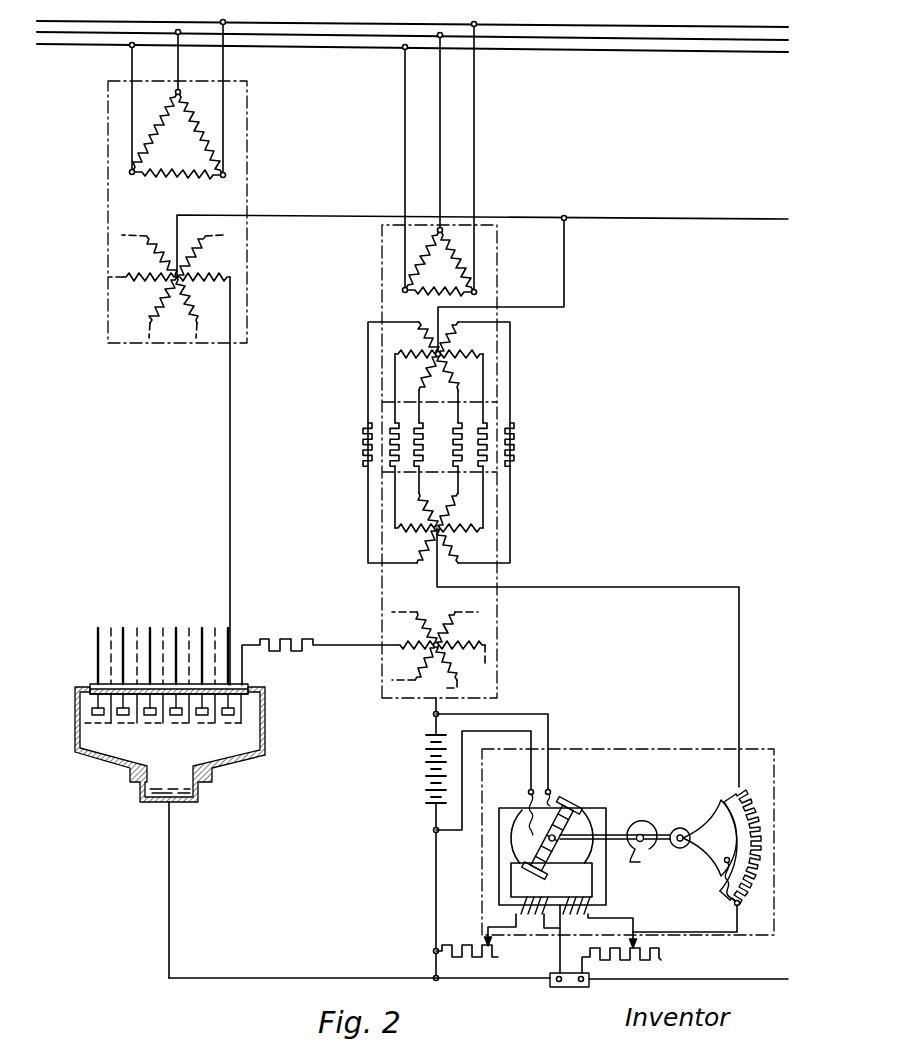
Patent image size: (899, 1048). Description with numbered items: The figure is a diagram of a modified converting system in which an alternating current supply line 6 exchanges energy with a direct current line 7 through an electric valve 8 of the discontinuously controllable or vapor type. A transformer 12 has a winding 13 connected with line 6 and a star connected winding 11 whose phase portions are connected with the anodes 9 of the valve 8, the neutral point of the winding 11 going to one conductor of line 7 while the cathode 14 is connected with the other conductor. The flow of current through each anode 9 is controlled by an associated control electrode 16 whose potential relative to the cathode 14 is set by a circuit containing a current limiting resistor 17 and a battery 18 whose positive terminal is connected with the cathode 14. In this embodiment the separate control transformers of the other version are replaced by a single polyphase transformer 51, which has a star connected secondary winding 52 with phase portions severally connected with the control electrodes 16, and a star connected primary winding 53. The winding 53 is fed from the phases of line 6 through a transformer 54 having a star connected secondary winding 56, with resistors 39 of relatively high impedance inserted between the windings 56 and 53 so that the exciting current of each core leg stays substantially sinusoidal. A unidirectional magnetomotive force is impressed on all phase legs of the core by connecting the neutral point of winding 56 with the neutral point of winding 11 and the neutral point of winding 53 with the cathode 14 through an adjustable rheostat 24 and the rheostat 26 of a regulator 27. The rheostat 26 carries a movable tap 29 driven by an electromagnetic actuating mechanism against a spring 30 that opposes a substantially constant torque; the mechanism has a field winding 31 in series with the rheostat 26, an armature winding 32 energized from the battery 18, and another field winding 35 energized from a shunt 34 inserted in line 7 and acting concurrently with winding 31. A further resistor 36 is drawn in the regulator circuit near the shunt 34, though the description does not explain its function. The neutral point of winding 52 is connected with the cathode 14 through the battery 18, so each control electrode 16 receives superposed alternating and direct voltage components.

The alternating current supply line 6 is at (610, 26).
The direct current line 7 is at (651, 219).
The electric valve 8 is at (77, 758).
The anodes 9 is at (226, 713).
The star connected winding 11 is at (147, 312).
The transformer 12 is at (248, 112).
The winding 13 is at (159, 183).
The cathode 14 is at (157, 801).
The control electrode 16 is at (226, 728).
The current limiting resistor 17 is at (277, 650).
The battery 18 is at (422, 763).
The adjustable rheostat 24 is at (456, 940).
The rheostat 26 is at (755, 796).
The regulator 27 is at (654, 745).
The movable tap 29 is at (725, 821).
The spring 30 is at (643, 823).
The field winding 31 is at (532, 895).
The armature winding 32 is at (571, 807).
The shunt 34 is at (552, 973).
The winding 35 is at (575, 894).
The resistor 36 is at (651, 958).
The resistors 39 is at (516, 433).
The polyphase transformer 51 is at (495, 678).
The star connected secondary winding 52 is at (452, 620).
The star connected primary winding 53 is at (456, 552).
The transformer 54 is at (497, 272).
The star connected secondary winding 56 is at (455, 330).